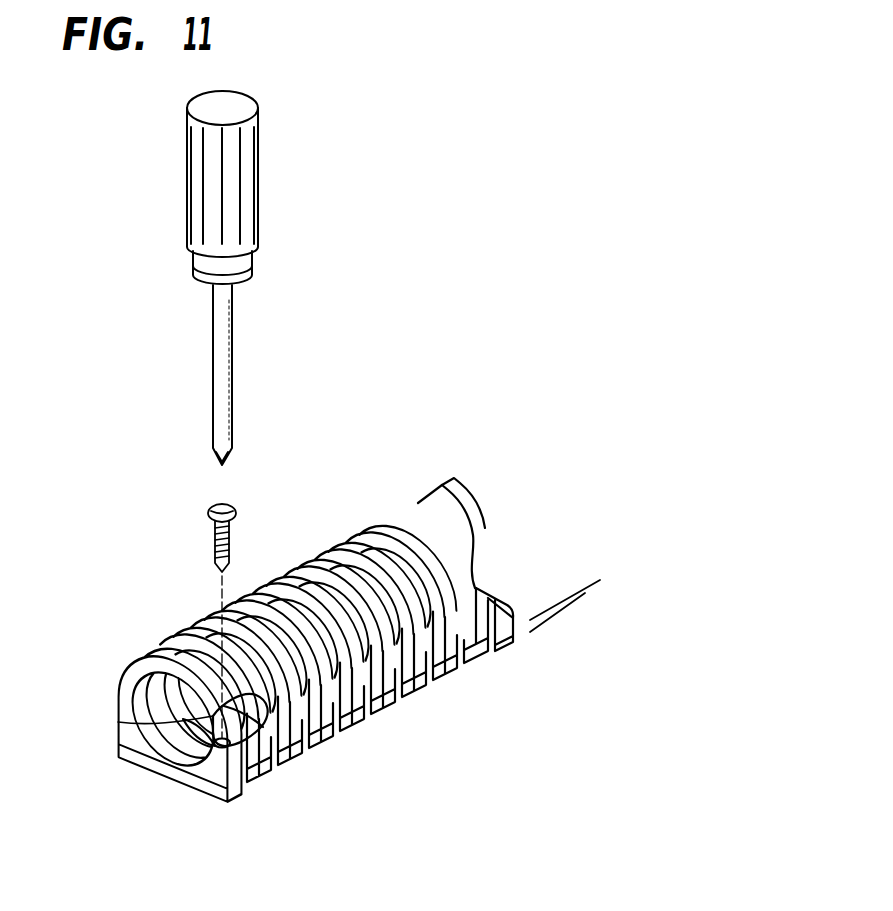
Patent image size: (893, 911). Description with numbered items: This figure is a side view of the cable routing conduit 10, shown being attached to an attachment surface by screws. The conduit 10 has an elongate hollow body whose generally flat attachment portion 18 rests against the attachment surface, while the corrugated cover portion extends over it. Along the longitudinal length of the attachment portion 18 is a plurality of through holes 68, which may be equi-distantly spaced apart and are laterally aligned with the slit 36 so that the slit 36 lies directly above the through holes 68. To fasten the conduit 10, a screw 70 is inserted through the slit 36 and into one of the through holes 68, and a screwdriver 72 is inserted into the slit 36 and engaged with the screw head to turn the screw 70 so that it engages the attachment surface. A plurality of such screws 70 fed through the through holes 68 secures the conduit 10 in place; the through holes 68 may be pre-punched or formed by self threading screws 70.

The conduit 10 is at (657, 560).
The attachment portion 18 is at (590, 594).
The slit 36 is at (335, 543).
The through holes 68 is at (118, 722).
The screw 70 is at (213, 540).
The screwdriver 72 is at (187, 186).